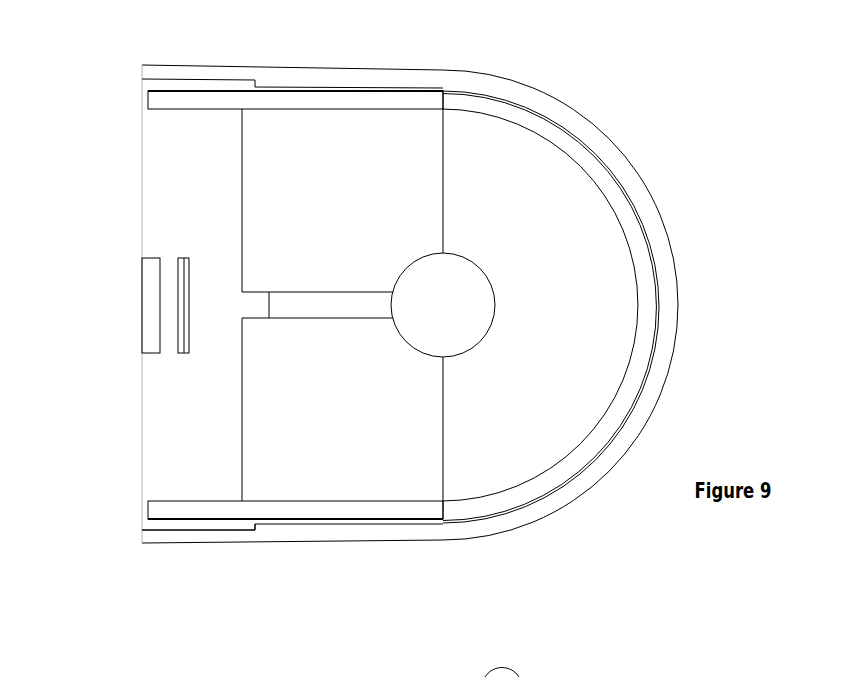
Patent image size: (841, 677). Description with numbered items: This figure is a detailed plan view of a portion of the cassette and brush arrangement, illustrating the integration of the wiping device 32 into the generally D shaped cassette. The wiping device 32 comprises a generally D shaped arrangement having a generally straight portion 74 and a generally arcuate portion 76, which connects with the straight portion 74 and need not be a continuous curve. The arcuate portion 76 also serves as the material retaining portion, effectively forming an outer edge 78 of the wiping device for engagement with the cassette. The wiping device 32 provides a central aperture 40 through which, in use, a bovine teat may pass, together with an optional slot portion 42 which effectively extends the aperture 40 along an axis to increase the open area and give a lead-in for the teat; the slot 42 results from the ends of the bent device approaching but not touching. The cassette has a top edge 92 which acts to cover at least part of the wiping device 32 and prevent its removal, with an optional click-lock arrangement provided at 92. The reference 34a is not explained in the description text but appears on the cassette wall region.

The wiping device 32 is at (530, 215).
The housing wall portion 34a is at (282, 531).
The central aperture 40 is at (448, 303).
The slot portion 42 is at (308, 303).
The generally straight portion 74 is at (495, 107).
The generally arcuate portion 76 is at (643, 340).
The outer edge 78 is at (173, 545).
The top edge 92 is at (167, 304).